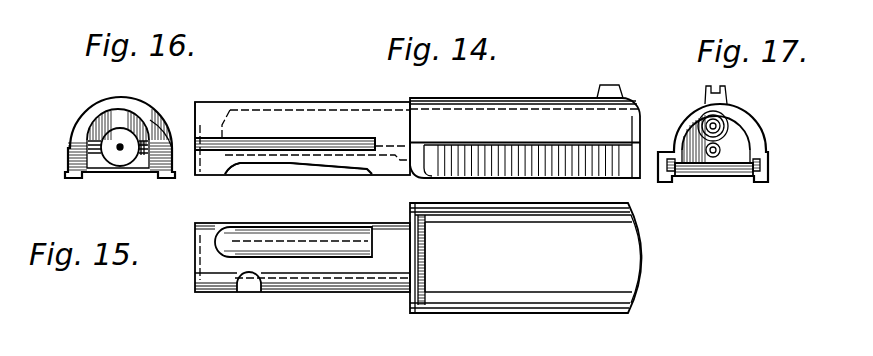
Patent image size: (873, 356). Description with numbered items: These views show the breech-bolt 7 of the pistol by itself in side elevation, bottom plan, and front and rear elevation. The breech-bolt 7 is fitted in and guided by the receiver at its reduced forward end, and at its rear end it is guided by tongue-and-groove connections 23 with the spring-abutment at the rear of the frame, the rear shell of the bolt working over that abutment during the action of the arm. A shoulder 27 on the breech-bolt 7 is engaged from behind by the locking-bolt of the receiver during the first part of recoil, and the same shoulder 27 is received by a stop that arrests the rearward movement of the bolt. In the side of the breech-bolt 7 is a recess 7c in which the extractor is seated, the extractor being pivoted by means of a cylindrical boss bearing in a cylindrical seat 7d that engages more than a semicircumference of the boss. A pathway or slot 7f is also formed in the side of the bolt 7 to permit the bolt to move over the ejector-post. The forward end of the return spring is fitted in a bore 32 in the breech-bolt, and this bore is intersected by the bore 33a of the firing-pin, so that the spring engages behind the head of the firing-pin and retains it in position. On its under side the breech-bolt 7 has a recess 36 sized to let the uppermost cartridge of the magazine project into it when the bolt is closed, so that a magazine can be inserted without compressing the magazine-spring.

In FIG. 16, the breech-bolt 7 is at (88, 119).
In FIG. 14, the breech-bolt 7 is at (325, 112).
In FIG. 15, the breech-bolt 7 is at (385, 240).
In FIG. 17, the breech-bolt 7 is at (754, 141).
In FIG. 16, the recess 7c is at (93, 149).
In FIG. 15, the cylindrical seat 7d is at (249, 285).
In FIG. 16, the pathway or slot 7f is at (158, 122).
In FIG. 14, the pathway or slot 7f is at (214, 142).
In FIG. 14, the tongue-and-groove connections 23 is at (525, 131).
In FIG. 15, the tongue-and-groove connections 23 is at (572, 223).
In FIG. 17, the tongue-and-groove connections 23 is at (757, 178).
In FIG. 15, the shoulder 27 is at (427, 261).
In FIG. 17, the shoulder 27 is at (702, 172).
In FIG. 17, the bore 32 is at (716, 126).
In FIG. 17, the bore of the firing-pin 33a is at (721, 151).
In FIG. 14, the recess 36 is at (288, 193).
In FIG. 15, the recess 36 is at (286, 236).